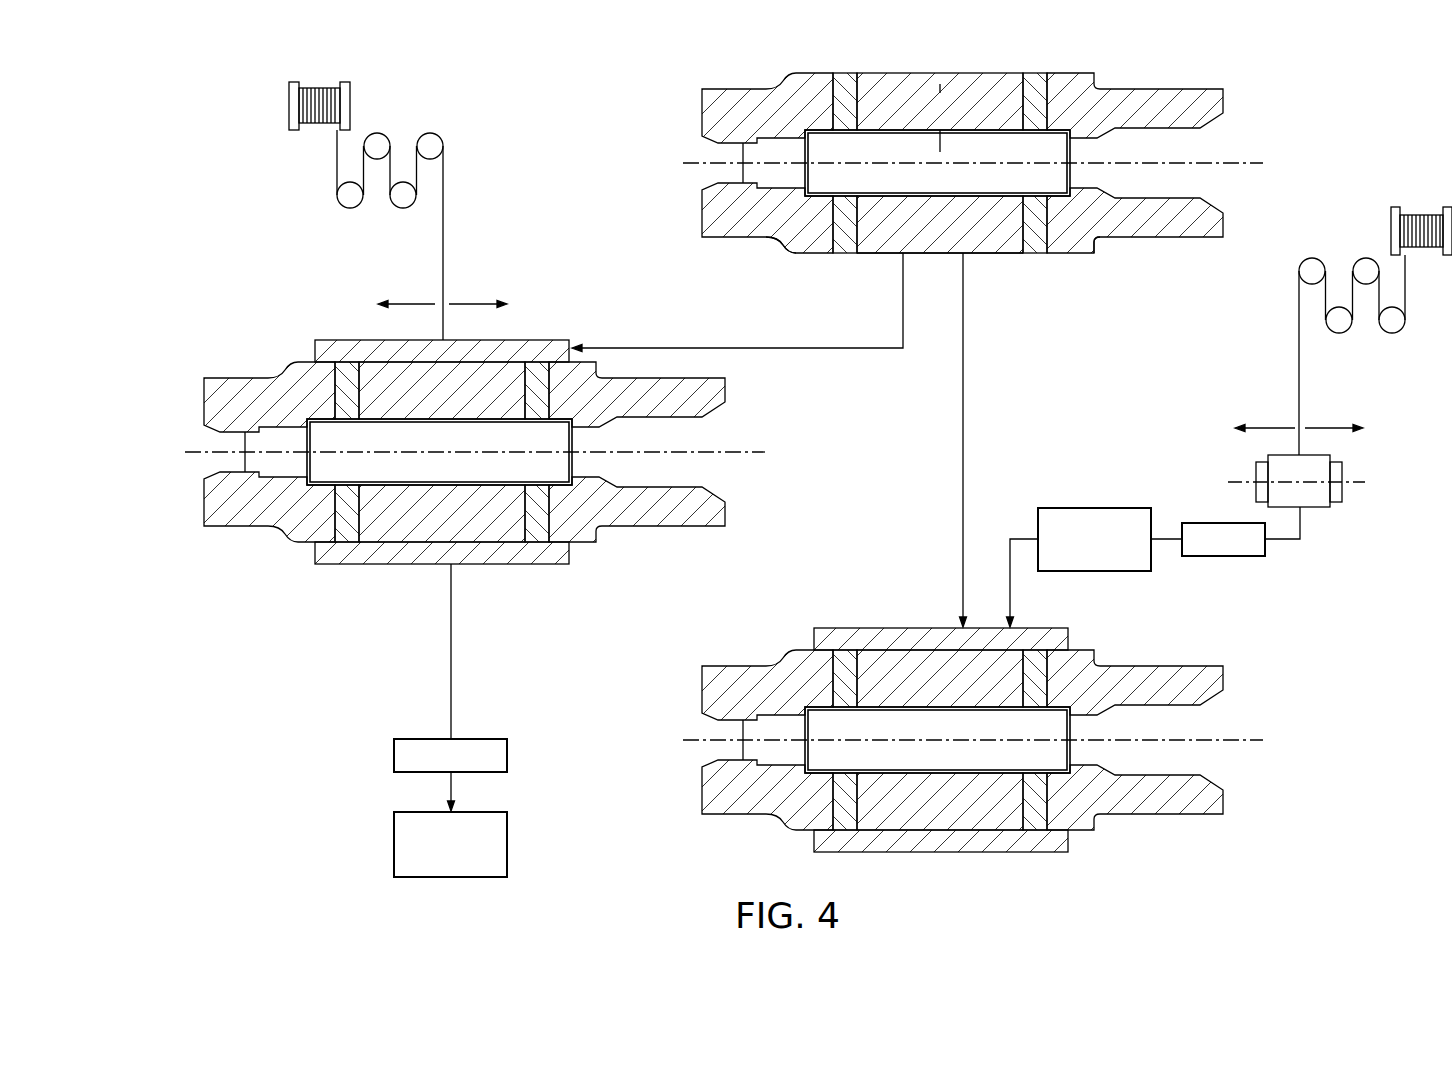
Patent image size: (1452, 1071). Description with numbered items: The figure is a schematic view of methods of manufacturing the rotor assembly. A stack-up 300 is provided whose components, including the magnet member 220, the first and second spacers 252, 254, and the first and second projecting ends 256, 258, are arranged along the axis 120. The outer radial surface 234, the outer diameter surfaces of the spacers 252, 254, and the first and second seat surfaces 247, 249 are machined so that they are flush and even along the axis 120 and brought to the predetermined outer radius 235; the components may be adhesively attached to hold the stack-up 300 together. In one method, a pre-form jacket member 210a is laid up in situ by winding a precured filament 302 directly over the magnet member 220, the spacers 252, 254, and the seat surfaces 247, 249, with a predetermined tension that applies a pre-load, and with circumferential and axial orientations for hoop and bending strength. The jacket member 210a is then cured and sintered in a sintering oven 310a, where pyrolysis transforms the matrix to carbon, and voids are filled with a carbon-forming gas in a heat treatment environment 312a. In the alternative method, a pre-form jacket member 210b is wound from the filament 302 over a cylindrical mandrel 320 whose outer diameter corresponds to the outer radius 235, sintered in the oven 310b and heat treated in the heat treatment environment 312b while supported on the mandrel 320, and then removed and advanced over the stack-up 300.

The stack-up 300 is at (733, 449).
The precured filament 302 is at (337, 158).
The axis 120 is at (1244, 160).
The predetermined outer radius 235 is at (943, 118).
The first projecting end 256 is at (740, 216).
The first seat surface 247 is at (818, 255).
The first spacer 252 is at (843, 246).
The outer radial surface 234 is at (918, 254).
The magnet member 220 is at (998, 254).
The second spacer 254 is at (1043, 246).
The second seat surface 249 is at (1063, 254).
The second projecting end 258 is at (1172, 228).
The pre-form jacket member 210a is at (338, 558).
The pre-form jacket member 210b is at (872, 632).
The sintering oven 310a is at (394, 756).
The heat treatment environment 312a is at (394, 843).
The oven 310b is at (1225, 556).
The heat treatment environment 312b is at (1094, 508).
The cylindrical mandrel 320 is at (1258, 470).